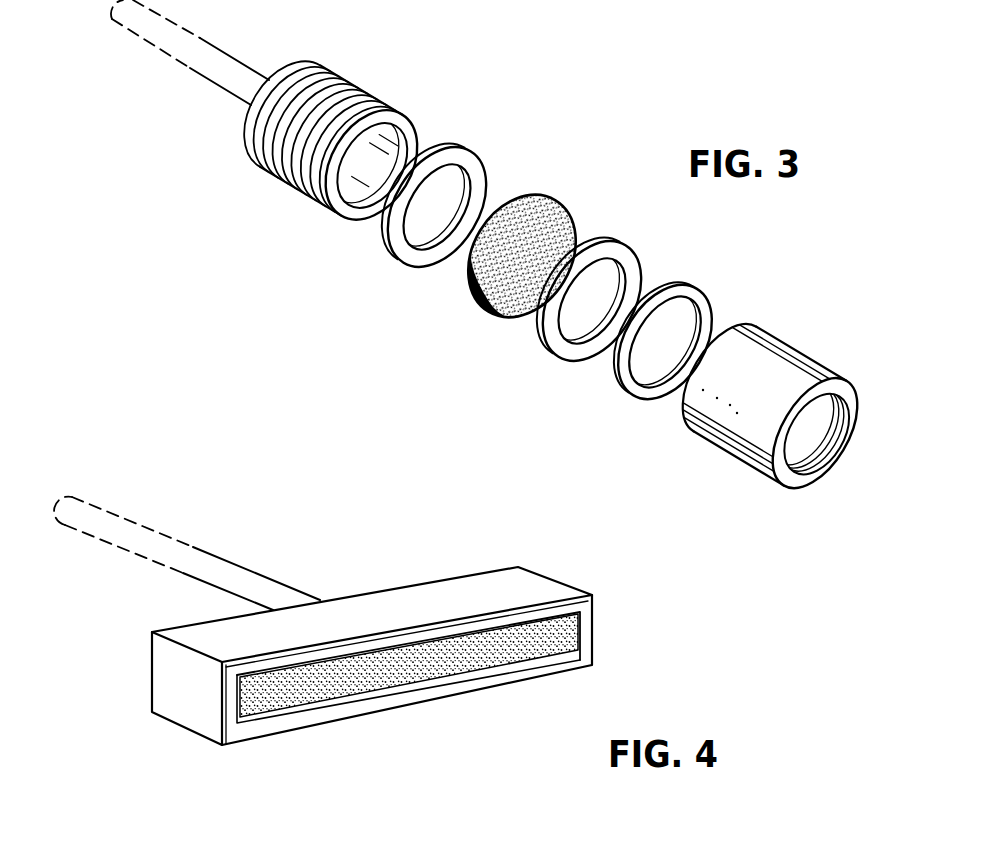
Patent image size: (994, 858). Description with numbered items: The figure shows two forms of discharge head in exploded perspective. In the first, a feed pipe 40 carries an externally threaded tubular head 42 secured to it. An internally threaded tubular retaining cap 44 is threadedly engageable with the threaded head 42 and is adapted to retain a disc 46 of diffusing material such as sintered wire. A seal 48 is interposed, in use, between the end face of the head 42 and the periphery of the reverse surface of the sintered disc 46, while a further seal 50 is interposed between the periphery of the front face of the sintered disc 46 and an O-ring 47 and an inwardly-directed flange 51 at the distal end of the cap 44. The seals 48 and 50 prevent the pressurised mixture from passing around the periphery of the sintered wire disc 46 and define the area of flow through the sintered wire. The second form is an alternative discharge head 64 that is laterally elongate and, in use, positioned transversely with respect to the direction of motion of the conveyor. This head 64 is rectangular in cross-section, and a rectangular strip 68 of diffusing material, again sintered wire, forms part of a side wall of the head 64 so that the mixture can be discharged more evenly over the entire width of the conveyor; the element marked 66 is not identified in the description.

In FIG. 3, the feed pipe 40 is at (238, 82).
In FIG. 4, the feed pipe 40 is at (267, 588).
In FIG. 3, the externally threaded tubular head 42 is at (308, 182).
In FIG. 3, the internally threaded tubular retaining cap 44 is at (747, 433).
In FIG. 3, the disc of diffusing material 46 is at (507, 317).
In FIG. 3, the O-ring 47 is at (640, 398).
In FIG. 3, the seal 48 is at (418, 258).
In FIG. 3, the further seal 50 is at (568, 358).
In FIG. 3, the inwardly-directed flange 51 is at (807, 477).
In FIG. 4, the discharge head 64 is at (531, 566).
In FIG. 4, the housing opening 66 is at (575, 630).
In FIG. 4, the rectangular strip of diffusing material 68 is at (432, 660).